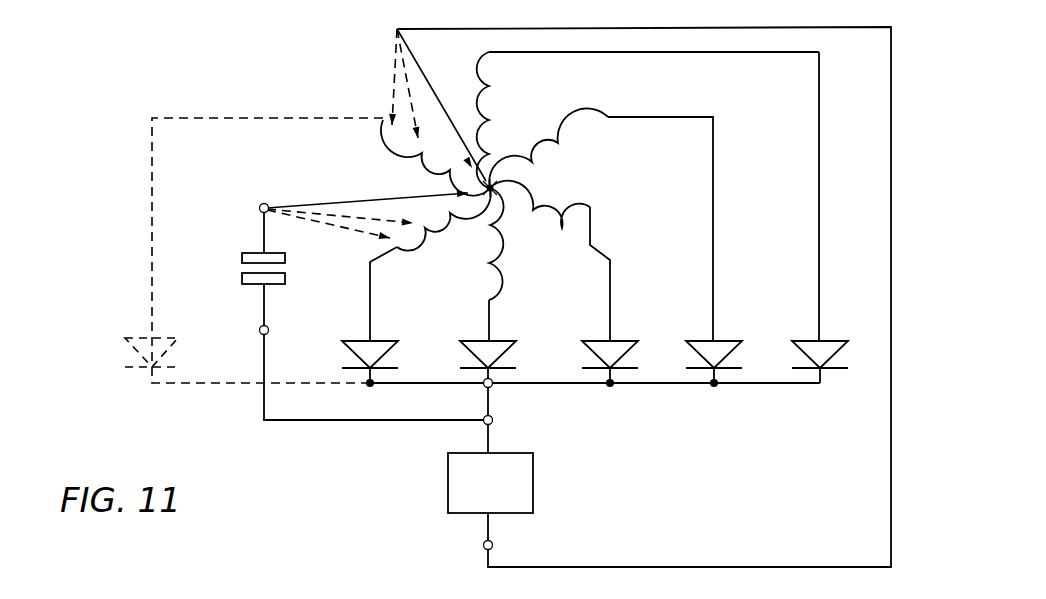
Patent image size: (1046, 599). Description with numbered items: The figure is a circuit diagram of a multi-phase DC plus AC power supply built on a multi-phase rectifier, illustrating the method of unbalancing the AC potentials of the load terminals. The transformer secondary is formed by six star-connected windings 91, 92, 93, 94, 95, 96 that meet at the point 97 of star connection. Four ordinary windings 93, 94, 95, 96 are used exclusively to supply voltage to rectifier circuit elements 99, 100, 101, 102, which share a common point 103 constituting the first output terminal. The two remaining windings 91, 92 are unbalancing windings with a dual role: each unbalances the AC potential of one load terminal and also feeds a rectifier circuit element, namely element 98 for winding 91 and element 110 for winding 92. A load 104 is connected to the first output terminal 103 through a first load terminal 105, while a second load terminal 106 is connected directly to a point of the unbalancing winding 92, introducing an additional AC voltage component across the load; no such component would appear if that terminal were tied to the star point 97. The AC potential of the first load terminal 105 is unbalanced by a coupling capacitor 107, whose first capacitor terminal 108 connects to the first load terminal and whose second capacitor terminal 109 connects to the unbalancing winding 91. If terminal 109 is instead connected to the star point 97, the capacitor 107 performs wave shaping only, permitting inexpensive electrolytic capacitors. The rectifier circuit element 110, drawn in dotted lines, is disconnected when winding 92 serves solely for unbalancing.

The unbalancing winding 91 is at (425, 250).
The unbalancing winding 92 is at (450, 168).
The ordinary winding 93 is at (486, 82).
The ordinary winding 94 is at (555, 155).
The ordinary winding 95 is at (592, 207).
The ordinary winding 96 is at (505, 272).
The point of star connection 97 is at (492, 180).
The rectifier circuit element 98 is at (348, 338).
The rectifier circuit element 99 is at (500, 341).
The rectifier circuit element 100 is at (624, 341).
The rectifier circuit element 101 is at (730, 341).
The rectifier circuit element 102 is at (836, 341).
The first output terminal 103 is at (493, 387).
The load 104 is at (533, 476).
The first load terminal 105 is at (484, 423).
The second load terminal 106 is at (484, 546).
The coupling capacitor 107 is at (242, 256).
The first capacitor terminal 108 is at (259, 331).
The second capacitor terminal 109 is at (264, 203).
The rectifier circuit element 110 is at (140, 337).